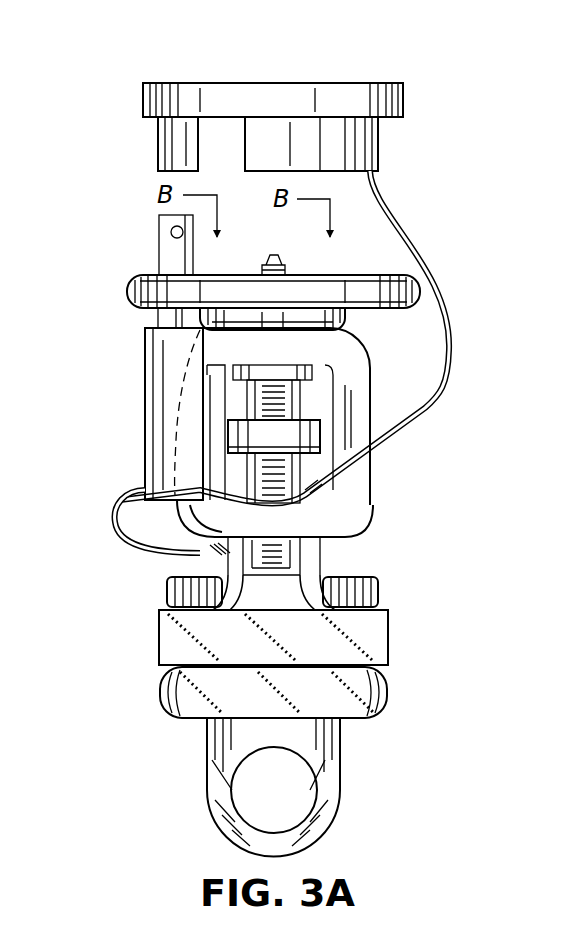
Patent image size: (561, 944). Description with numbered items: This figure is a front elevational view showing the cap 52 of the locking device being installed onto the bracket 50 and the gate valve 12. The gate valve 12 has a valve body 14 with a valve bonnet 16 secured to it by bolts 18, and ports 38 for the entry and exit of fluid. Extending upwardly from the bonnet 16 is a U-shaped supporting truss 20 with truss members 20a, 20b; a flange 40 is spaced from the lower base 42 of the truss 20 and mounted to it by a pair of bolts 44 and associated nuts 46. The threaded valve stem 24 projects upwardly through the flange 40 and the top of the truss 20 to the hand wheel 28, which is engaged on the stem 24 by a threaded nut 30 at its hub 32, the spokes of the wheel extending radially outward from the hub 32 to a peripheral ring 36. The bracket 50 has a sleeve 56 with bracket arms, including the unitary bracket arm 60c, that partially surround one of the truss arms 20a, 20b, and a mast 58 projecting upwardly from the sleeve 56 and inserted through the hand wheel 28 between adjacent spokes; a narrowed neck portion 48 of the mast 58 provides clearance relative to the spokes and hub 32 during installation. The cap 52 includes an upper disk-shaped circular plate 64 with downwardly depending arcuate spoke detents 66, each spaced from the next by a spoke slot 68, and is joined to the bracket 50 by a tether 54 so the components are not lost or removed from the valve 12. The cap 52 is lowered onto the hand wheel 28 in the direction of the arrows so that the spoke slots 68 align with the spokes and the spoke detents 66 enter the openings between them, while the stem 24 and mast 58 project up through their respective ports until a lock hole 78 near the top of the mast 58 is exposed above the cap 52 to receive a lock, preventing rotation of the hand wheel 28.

The gate valve 12 is at (462, 562).
The valve body 14 is at (249, 787).
The valve bonnet 16 is at (137, 533).
The bolts 18 is at (170, 590).
The U-shaped supporting truss 20 is at (266, 441).
The truss member 20a is at (360, 428).
The truss member 20b is at (172, 446).
The valve stem 24 is at (278, 256).
The hand wheel 28 is at (241, 278).
The threaded nut 30 is at (320, 372).
The hub 32 is at (346, 321).
The peripheral ring 36 is at (340, 279).
The ports 38 is at (274, 790).
The flange 40 is at (325, 448).
The lower base 42 is at (275, 515).
The bolts 44 is at (290, 470).
The nuts 46 is at (292, 548).
The narrowed neck portion 48 is at (170, 320).
The bracket 50 is at (134, 414).
The cap 52 is at (281, 102).
The tether 54 is at (405, 228).
The sleeve 56 is at (158, 400).
The mast 58 is at (145, 245).
The unitary bracket arm 60c is at (120, 503).
The circular plate 64 is at (172, 84).
The spoke detents 66 is at (168, 145).
The spoke slot 68 is at (237, 160).
The lock hole 78 is at (171, 232).